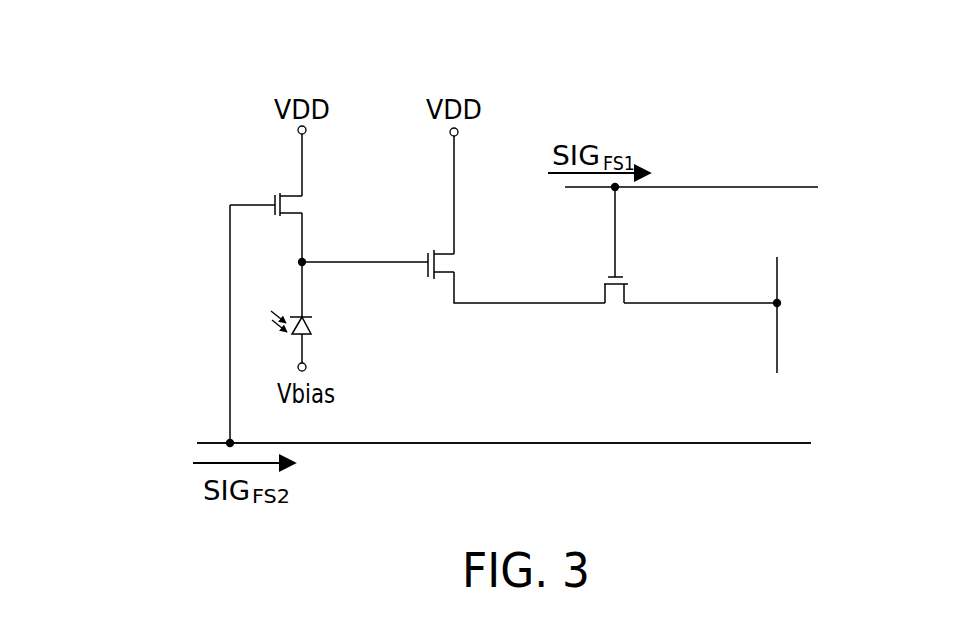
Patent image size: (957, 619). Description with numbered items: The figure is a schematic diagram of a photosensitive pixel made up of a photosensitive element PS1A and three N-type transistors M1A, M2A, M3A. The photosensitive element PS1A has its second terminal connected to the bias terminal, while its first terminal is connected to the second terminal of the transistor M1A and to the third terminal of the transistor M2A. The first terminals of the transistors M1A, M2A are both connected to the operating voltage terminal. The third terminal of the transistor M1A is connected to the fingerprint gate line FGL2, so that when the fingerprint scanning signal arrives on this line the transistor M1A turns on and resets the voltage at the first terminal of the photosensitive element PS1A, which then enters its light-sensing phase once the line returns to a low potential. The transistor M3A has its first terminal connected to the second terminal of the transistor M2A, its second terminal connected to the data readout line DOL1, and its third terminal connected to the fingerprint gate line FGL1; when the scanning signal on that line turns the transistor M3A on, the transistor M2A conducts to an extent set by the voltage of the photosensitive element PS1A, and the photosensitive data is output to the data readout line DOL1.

The transistor M1A is at (275, 195).
The transistor M2A is at (428, 253).
The transistor M3A is at (605, 283).
The photosensitive element PS1A is at (313, 330).
The fingerprint gate line FGL1 is at (734, 186).
The fingerprint gate line FGL2 is at (472, 444).
The data readout line DOL1 is at (778, 282).